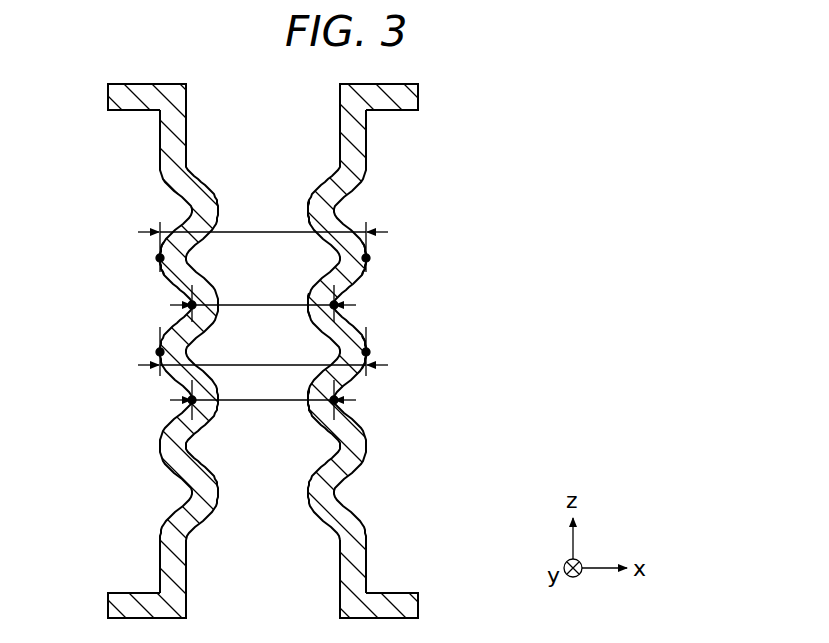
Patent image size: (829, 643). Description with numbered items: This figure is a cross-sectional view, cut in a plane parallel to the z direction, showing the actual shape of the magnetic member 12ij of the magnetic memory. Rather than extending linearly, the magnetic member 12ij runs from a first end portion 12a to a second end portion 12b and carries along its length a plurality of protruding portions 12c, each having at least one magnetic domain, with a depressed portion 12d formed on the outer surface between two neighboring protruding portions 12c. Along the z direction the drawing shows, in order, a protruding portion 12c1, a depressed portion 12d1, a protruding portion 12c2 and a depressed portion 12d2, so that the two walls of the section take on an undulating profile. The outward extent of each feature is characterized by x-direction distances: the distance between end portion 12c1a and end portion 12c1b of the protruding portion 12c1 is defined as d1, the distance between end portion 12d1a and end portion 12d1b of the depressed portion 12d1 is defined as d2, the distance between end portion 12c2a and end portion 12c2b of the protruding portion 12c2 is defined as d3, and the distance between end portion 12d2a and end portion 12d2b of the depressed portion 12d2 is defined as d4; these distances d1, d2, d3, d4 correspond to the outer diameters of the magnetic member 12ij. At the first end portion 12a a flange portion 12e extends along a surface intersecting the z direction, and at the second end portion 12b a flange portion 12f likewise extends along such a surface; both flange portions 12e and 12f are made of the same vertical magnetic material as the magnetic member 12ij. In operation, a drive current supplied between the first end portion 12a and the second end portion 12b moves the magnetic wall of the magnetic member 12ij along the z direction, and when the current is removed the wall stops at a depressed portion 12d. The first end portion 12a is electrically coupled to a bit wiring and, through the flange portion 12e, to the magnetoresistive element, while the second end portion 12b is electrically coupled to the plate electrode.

The magnetic member 12ij is at (628, 365).
The flange portion 12f is at (410, 93).
The second end portion 12b is at (366, 147).
The first end portion 12a is at (366, 567).
The flange portion 12e is at (414, 606).
The protruding portion 12c is at (178, 259).
The depressed portion 12d is at (327, 212).
The protruding portion 12c1 is at (366, 246).
The protruding portion 12c2 is at (367, 337).
The depressed portion 12d1 is at (332, 283).
The depressed portion 12d2 is at (333, 377).
The end portion 12c1a is at (158, 258).
The end portion 12c1b is at (366, 258).
The end portion 12c2a is at (158, 352).
The end portion 12c2b is at (366, 352).
The end portion 12d1a is at (190, 304).
The end portion 12d1b is at (334, 305).
The end portion 12d2a is at (190, 398).
The end portion 12d2b is at (334, 400).
The distance d1 is at (250, 243).
The distance d2 is at (250, 303).
The distance d3 is at (250, 354).
The distance d4 is at (250, 400).